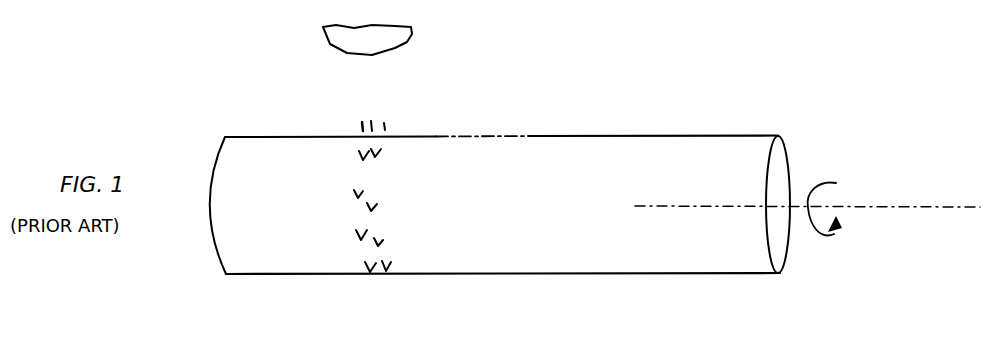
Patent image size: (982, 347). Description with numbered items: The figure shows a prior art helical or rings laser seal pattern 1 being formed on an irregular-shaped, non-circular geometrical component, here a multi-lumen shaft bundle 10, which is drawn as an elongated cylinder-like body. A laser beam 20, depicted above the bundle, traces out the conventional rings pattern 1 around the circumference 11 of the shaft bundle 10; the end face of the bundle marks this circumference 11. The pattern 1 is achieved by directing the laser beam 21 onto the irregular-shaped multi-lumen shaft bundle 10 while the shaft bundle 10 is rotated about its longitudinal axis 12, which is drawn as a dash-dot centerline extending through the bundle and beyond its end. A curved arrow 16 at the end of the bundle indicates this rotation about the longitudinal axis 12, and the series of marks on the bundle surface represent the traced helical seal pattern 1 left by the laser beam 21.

The helical laser seal pattern 1 is at (380, 179).
The multi-lumen shaft bundle 10 is at (613, 127).
The circumference 11 is at (790, 151).
The longitudinal axis 12 is at (686, 207).
The direction of rotation 16 is at (831, 199).
The laser beam 20 is at (409, 34).
The laser beam 21 is at (383, 93).